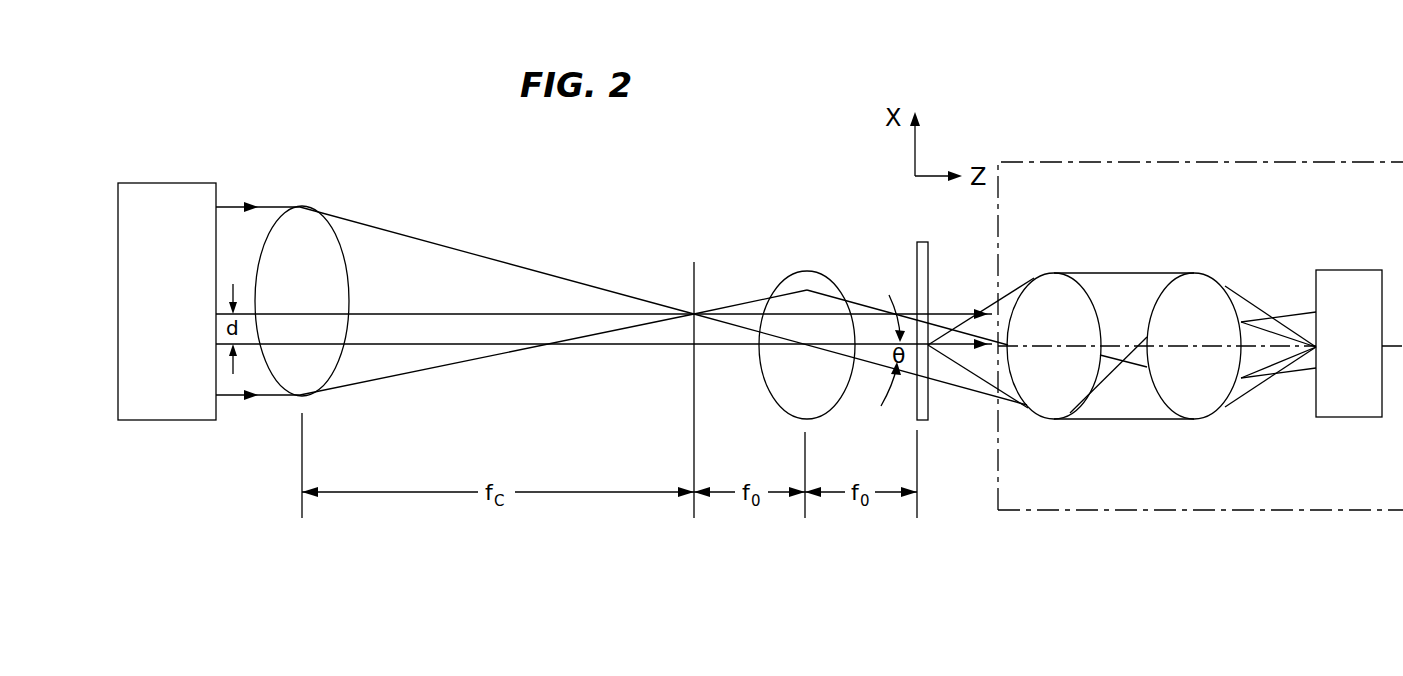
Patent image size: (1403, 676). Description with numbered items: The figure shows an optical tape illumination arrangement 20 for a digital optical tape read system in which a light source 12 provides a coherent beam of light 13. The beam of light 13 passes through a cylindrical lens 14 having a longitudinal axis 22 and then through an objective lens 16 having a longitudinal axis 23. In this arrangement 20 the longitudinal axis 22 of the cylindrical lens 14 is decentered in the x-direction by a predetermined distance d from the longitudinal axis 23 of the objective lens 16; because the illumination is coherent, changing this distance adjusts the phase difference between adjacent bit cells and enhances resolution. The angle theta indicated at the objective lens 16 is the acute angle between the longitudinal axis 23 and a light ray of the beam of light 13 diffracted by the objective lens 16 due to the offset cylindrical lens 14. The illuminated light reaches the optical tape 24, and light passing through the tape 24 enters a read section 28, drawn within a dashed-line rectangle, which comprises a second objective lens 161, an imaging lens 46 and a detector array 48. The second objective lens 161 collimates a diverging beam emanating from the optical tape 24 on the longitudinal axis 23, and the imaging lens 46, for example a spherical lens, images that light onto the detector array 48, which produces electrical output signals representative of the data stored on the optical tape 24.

The light source 12 is at (208, 183).
The coherent beam of light 13 is at (275, 207).
The cylindrical lens 14 is at (312, 222).
The objective lens 16 is at (808, 271).
The second objective lens 161 is at (1060, 273).
The optical tape illumination arrangement 20 is at (742, 164).
The longitudinal axis of the cylindrical lens 22 is at (442, 314).
The longitudinal axis of the objective lens 23 is at (494, 344).
The optical tape 24 is at (929, 268).
The read section 28 is at (1255, 162).
The imaging lens 46 is at (1197, 273).
The detector array 48 is at (1329, 270).